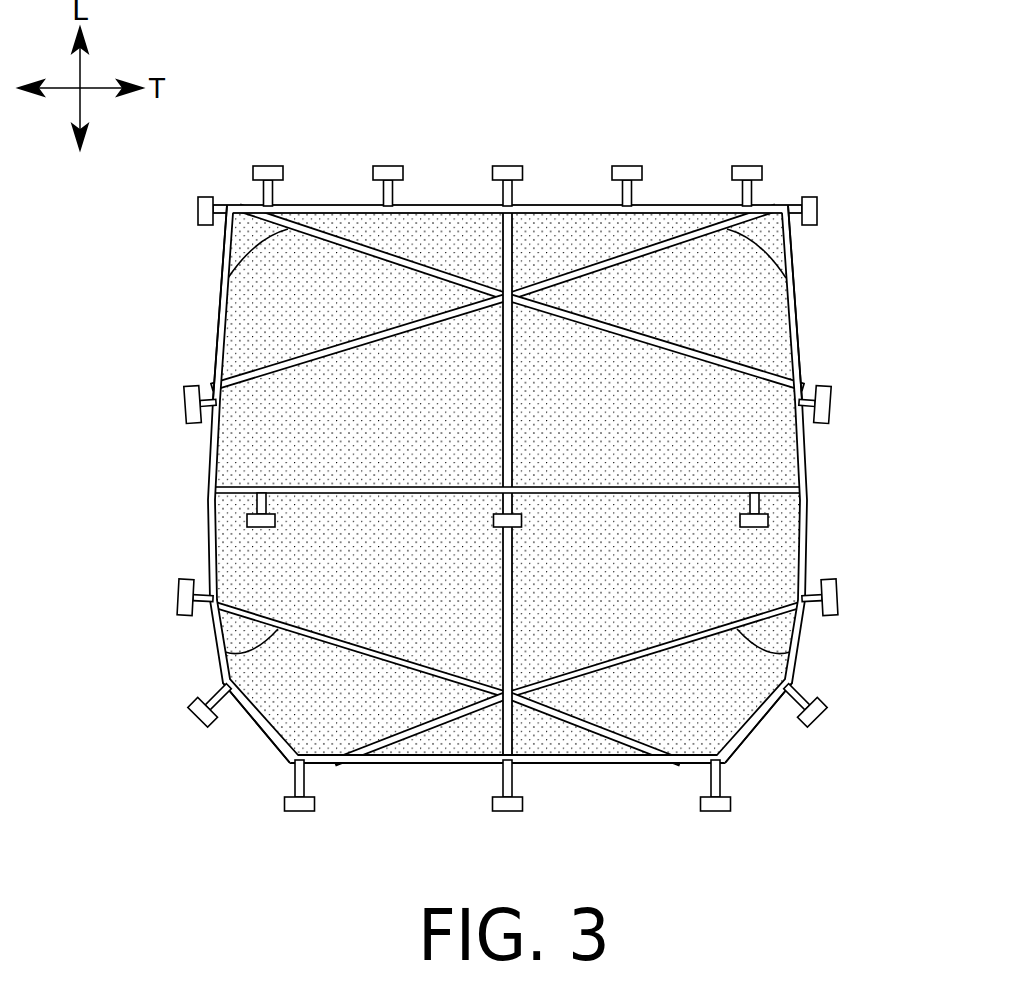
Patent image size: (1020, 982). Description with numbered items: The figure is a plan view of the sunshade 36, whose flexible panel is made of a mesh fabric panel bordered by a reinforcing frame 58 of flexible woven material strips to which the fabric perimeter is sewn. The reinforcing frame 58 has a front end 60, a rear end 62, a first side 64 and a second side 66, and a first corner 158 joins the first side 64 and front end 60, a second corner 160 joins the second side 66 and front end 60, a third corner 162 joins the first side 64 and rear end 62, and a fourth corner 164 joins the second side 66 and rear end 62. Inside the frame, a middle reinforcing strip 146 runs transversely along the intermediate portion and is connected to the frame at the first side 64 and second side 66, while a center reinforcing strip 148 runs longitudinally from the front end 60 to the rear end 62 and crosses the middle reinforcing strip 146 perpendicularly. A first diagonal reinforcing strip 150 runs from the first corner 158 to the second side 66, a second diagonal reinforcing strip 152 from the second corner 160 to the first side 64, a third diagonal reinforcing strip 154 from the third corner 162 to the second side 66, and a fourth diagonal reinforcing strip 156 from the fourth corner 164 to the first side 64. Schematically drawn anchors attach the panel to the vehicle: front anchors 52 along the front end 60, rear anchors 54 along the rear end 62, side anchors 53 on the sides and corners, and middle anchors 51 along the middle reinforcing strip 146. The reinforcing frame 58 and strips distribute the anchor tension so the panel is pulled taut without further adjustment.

The sunshade 36 is at (860, 136).
The middle anchors 51 is at (247, 520).
The front anchors 52 is at (268, 166).
The side anchors 53 is at (198, 211).
The rear anchors 54 is at (192, 720).
The reinforcing frame 58 is at (507, 452).
The front end 60 is at (443, 205).
The rear end 62 is at (402, 764).
The first side 64 is at (217, 345).
The second side 66 is at (798, 345).
The middle reinforcing strip 146 is at (221, 490).
The center reinforcing strip 148 is at (506, 237).
The first diagonal reinforcing strip 150 is at (228, 278).
The second diagonal reinforcing strip 152 is at (786, 278).
The third diagonal reinforcing strip 154 is at (225, 652).
The fourth diagonal reinforcing strip 156 is at (612, 736).
The first corner 158 is at (242, 205).
The second corner 160 is at (773, 207).
The third corner 162 is at (293, 761).
The fourth corner 164 is at (722, 761).